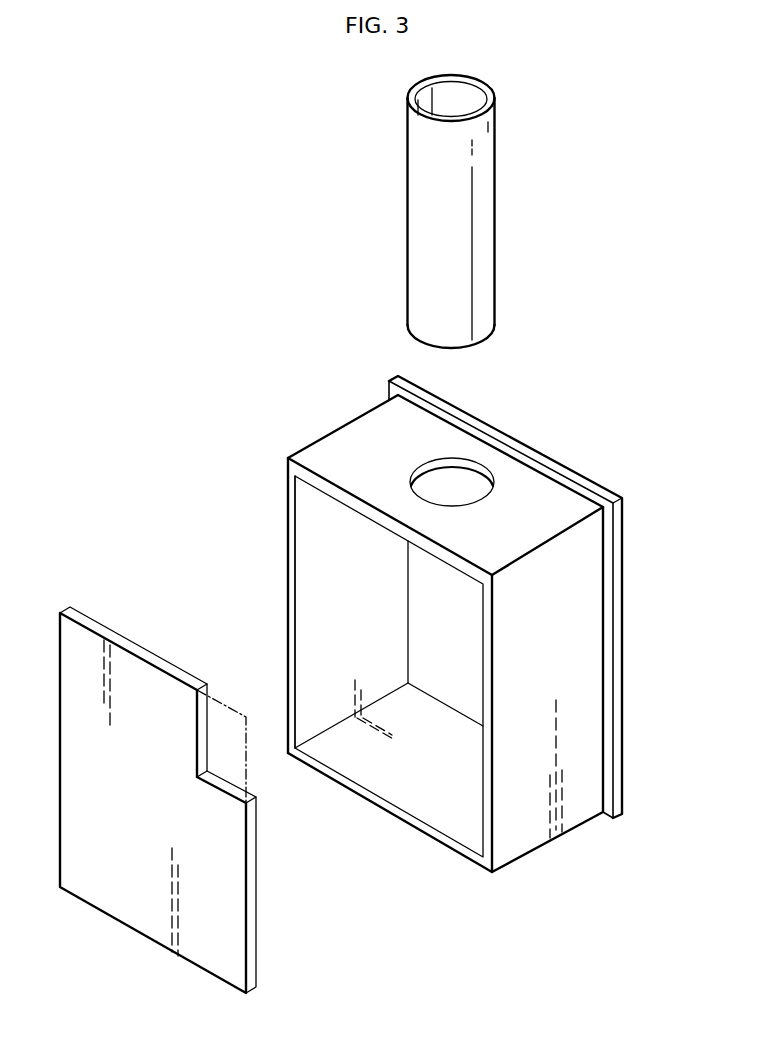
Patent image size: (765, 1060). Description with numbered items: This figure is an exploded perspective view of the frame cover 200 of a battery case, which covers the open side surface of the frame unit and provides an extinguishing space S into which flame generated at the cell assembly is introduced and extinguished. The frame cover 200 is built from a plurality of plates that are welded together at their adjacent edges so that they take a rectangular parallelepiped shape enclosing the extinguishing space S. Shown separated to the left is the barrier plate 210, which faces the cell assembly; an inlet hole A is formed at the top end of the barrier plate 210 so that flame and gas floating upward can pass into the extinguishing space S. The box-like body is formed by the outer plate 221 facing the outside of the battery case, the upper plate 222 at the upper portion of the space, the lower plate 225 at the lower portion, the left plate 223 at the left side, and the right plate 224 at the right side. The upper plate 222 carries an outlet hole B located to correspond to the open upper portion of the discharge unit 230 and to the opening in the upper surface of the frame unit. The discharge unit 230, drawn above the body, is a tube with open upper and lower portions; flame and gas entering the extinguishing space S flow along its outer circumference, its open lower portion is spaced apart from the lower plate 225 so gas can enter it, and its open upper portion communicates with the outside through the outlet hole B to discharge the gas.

The frame cover 200 is at (150, 292).
The barrier plate 210 is at (153, 800).
The outer plate 221 is at (620, 608).
The upper plate 222 is at (318, 457).
The left plate 223 is at (313, 570).
The right plate 224 is at (573, 678).
The lower plate 225 is at (418, 793).
The discharge unit 230 is at (425, 223).
The inlet hole A is at (233, 750).
The outlet hole B is at (452, 485).
The extinguishing space S is at (437, 645).